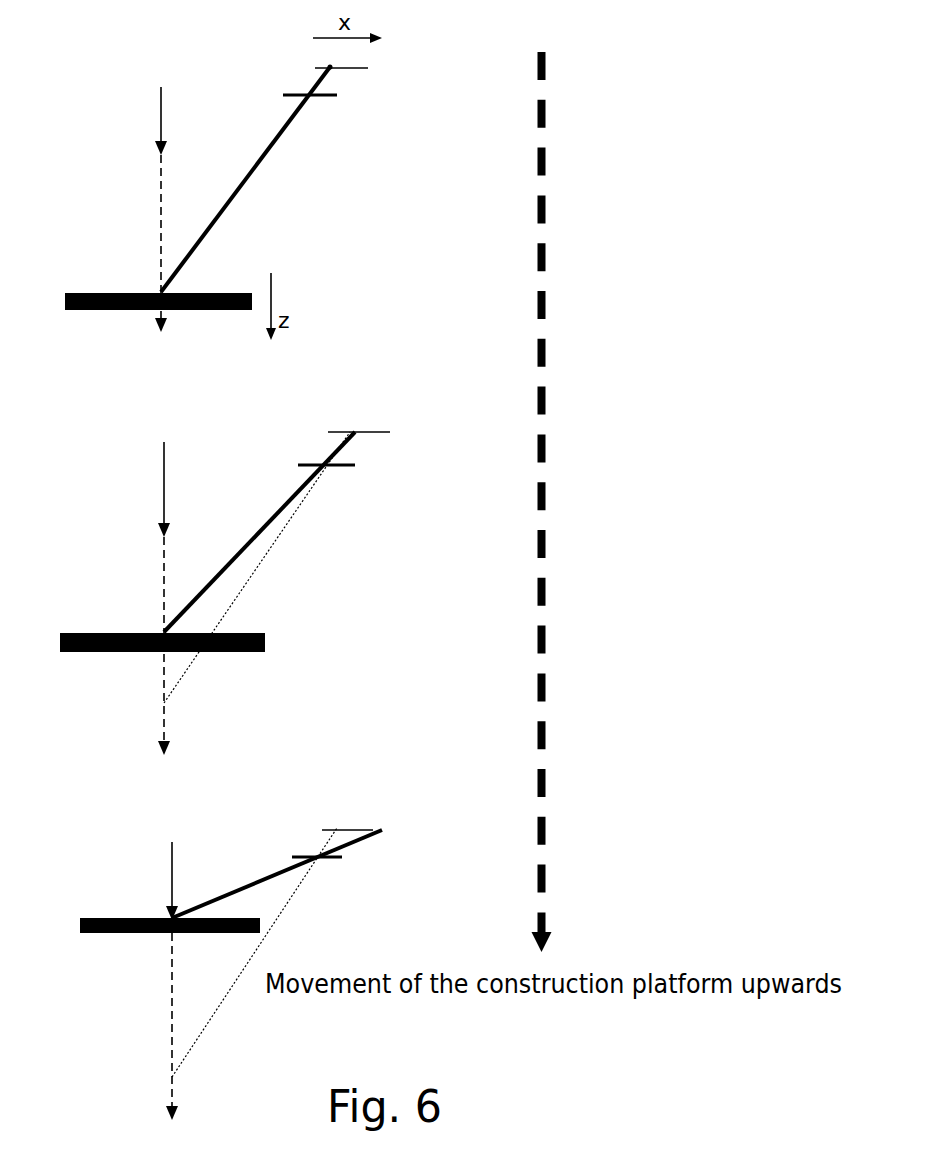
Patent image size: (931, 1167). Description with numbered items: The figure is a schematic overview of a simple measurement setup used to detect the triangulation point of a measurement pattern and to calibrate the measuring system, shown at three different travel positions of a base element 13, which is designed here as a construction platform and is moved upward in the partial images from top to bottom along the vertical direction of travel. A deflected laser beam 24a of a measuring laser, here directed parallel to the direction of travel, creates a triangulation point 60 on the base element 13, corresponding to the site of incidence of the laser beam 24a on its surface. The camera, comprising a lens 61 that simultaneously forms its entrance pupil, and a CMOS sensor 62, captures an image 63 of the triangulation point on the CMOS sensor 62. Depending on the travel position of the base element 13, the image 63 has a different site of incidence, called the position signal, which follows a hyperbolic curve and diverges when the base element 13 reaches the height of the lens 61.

The base element 13 is at (85, 300).
The laser beam 24a is at (160, 125).
The triangulation point 60 is at (160, 292).
The lens 61 is at (328, 100).
The CMOS sensor 62 is at (358, 70).
The image of the triangulation point 63 is at (330, 66).